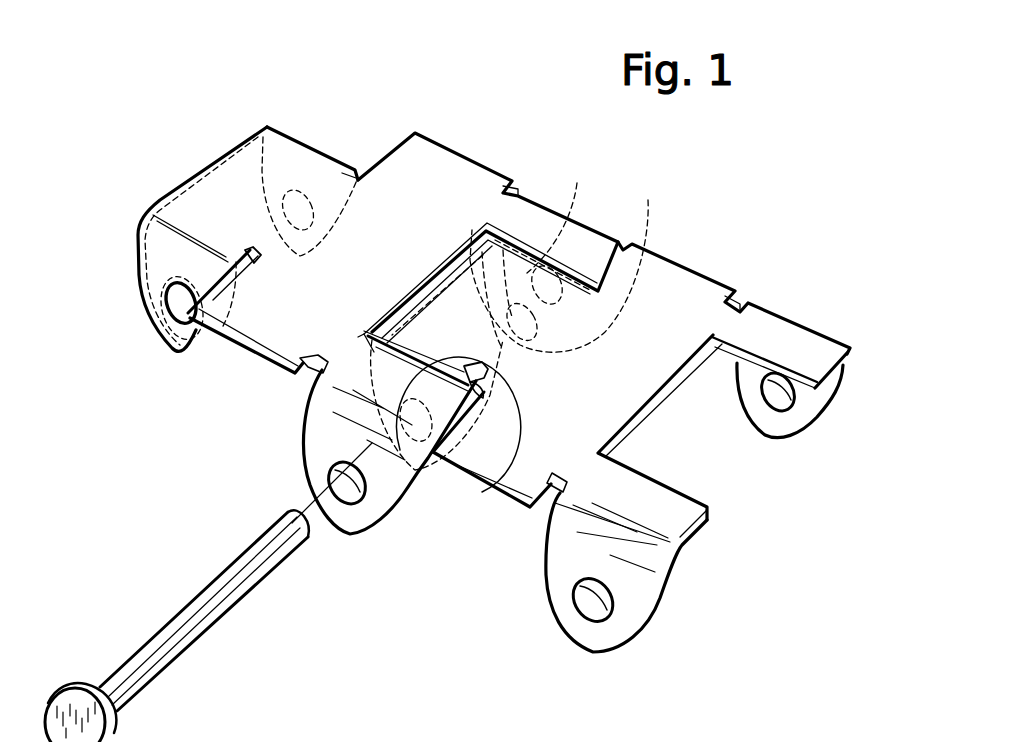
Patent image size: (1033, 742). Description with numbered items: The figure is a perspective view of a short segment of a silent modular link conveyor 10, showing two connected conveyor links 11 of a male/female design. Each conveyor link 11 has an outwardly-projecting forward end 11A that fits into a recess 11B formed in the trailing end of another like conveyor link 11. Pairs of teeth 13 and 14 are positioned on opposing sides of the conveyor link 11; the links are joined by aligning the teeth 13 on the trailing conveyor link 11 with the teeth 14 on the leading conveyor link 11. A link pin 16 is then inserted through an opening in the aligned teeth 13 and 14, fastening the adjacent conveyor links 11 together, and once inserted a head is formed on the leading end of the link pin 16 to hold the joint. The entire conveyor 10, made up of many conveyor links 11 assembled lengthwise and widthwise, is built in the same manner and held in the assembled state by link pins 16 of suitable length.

The silent modular link conveyor 10 is at (247, 110).
The conveyor link 11 is at (402, 188).
The outwardly-projecting forward end 11A is at (218, 200).
The recess 11B is at (517, 430).
The teeth 13 is at (160, 255).
The teeth 14 is at (322, 472).
The link pin 16 is at (180, 595).